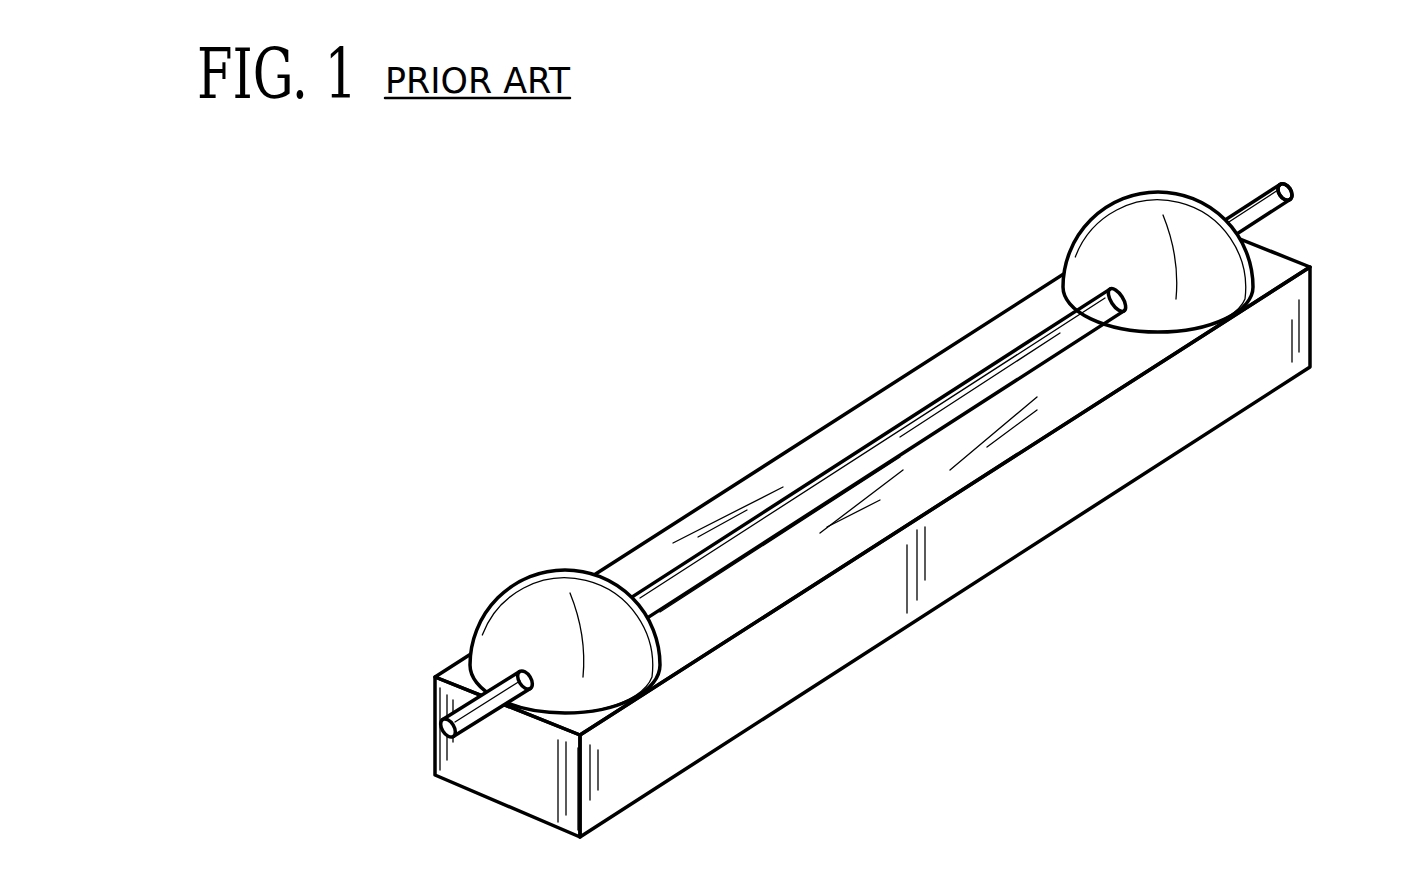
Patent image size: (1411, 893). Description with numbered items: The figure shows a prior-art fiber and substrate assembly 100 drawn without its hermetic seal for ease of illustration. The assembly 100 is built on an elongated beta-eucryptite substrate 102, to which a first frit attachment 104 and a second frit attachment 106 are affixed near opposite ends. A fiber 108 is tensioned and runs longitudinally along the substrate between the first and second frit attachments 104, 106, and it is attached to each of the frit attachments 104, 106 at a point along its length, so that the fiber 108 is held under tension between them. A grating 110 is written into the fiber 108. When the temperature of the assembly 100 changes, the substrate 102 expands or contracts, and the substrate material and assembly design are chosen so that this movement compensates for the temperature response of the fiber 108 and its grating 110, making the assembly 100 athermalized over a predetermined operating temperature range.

The fiber and substrate assembly 100 is at (920, 451).
The beta-eucryptite substrate 102 is at (760, 720).
The first frit attachment 104 is at (1093, 215).
The second frit attachment 106 is at (550, 573).
The fiber 108 is at (1247, 195).
The grating 110 is at (1276, 220).